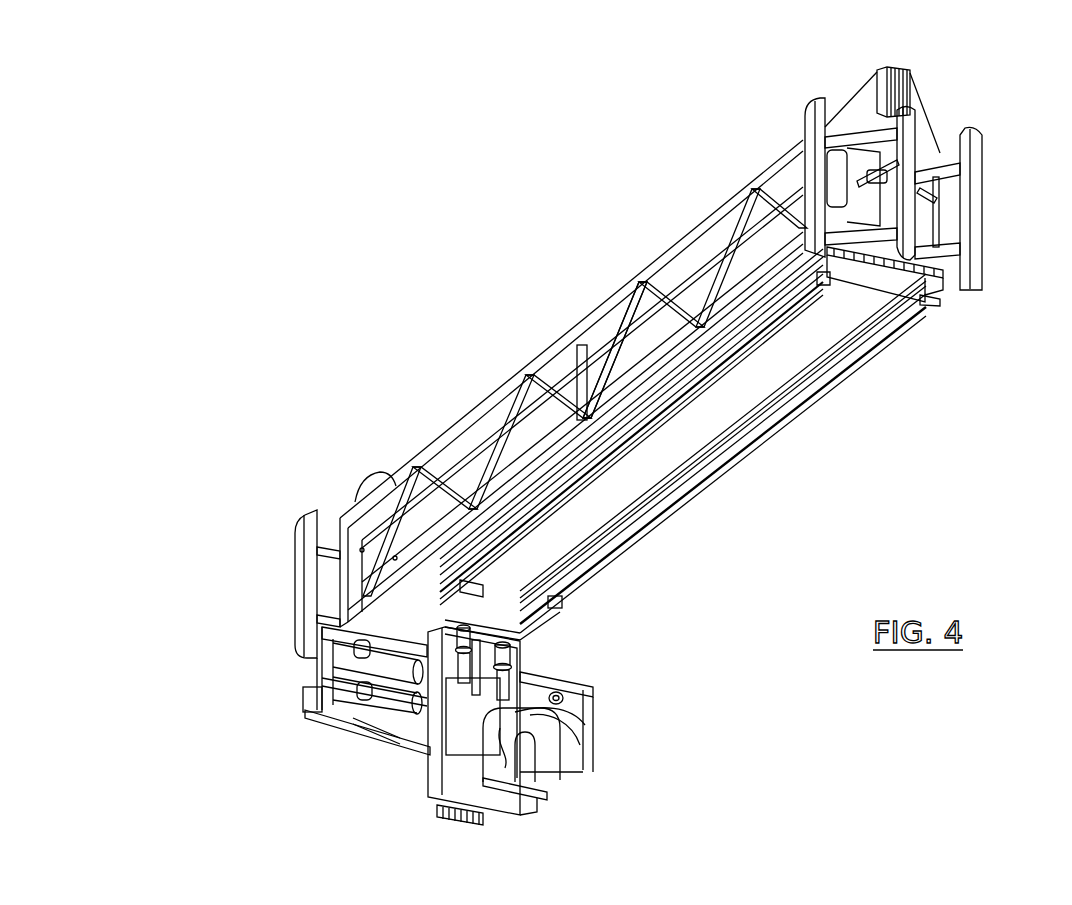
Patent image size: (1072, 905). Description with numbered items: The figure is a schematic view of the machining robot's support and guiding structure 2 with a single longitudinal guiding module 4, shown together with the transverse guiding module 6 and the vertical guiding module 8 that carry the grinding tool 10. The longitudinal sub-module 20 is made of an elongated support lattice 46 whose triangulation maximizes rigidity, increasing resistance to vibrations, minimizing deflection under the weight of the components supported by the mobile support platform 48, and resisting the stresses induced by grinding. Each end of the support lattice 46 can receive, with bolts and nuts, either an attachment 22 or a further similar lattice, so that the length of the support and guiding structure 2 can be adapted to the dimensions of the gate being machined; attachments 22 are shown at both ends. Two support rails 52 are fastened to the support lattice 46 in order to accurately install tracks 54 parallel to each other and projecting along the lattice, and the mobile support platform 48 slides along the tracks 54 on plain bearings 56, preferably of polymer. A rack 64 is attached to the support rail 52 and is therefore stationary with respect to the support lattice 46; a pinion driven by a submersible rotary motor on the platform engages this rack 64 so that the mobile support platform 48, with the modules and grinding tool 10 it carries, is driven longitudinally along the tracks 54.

The support and guiding structure 2 is at (722, 660).
The longitudinal guiding module 4 is at (603, 628).
The transverse guiding module 6 is at (270, 706).
The vertical guiding module 8 is at (410, 782).
The grinding tool 10 is at (595, 783).
The longitudinal sub-module 20 is at (497, 390).
The attachment 22 is at (953, 104).
The support lattice 46 is at (618, 322).
The mobile support platform 48 is at (540, 625).
The support rail 52 is at (835, 283).
The tracks 54 is at (727, 370).
The plain bearings 56 is at (567, 601).
The rack 64 is at (848, 350).